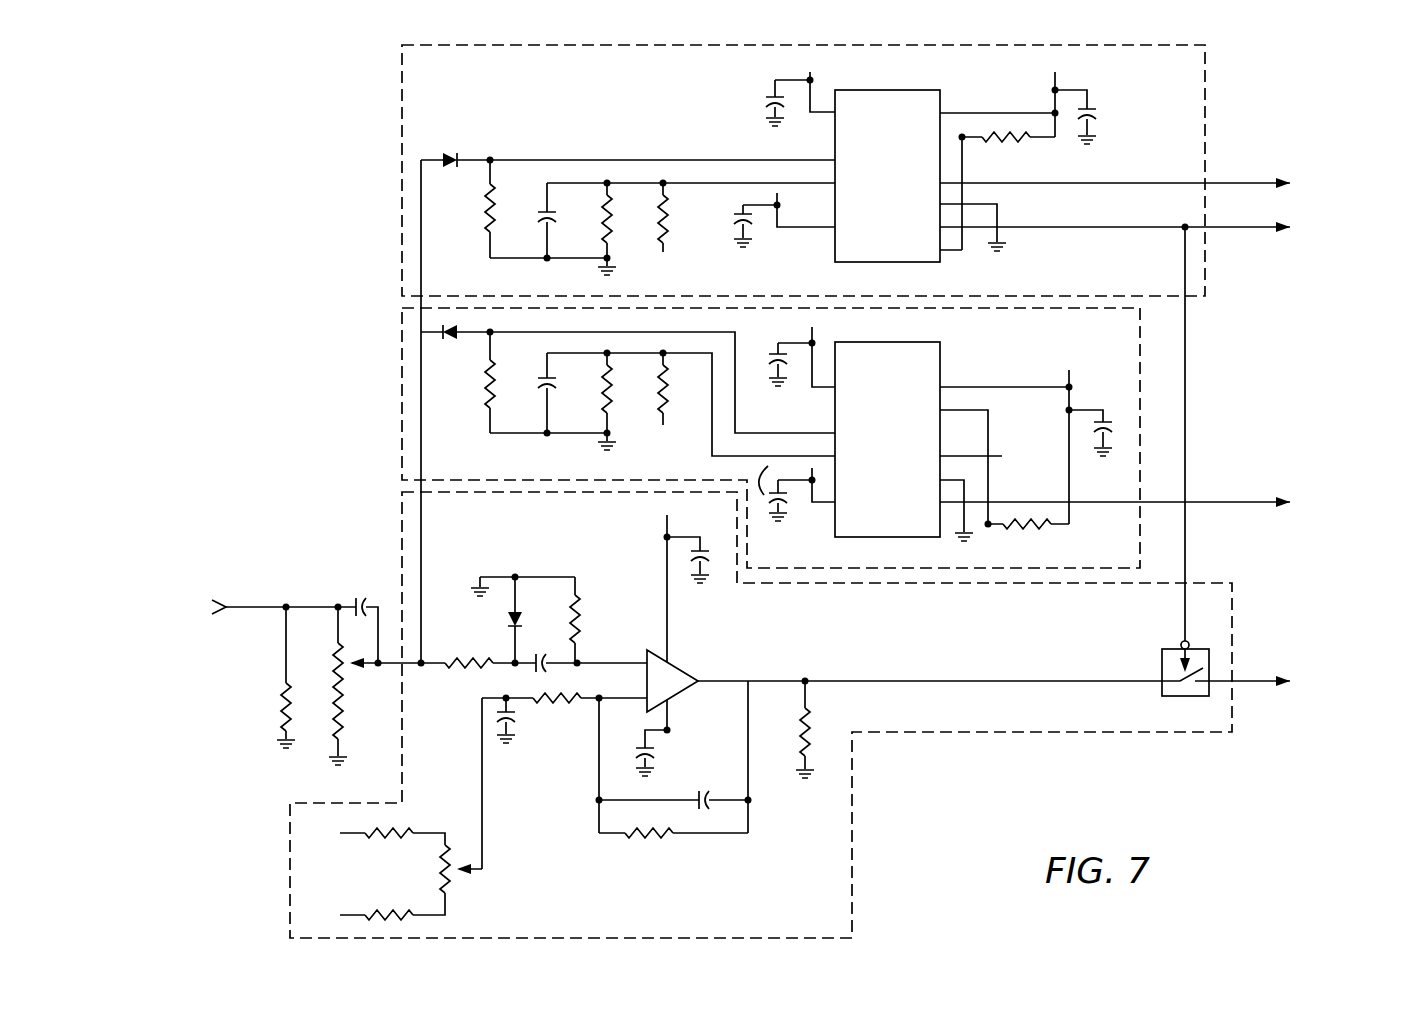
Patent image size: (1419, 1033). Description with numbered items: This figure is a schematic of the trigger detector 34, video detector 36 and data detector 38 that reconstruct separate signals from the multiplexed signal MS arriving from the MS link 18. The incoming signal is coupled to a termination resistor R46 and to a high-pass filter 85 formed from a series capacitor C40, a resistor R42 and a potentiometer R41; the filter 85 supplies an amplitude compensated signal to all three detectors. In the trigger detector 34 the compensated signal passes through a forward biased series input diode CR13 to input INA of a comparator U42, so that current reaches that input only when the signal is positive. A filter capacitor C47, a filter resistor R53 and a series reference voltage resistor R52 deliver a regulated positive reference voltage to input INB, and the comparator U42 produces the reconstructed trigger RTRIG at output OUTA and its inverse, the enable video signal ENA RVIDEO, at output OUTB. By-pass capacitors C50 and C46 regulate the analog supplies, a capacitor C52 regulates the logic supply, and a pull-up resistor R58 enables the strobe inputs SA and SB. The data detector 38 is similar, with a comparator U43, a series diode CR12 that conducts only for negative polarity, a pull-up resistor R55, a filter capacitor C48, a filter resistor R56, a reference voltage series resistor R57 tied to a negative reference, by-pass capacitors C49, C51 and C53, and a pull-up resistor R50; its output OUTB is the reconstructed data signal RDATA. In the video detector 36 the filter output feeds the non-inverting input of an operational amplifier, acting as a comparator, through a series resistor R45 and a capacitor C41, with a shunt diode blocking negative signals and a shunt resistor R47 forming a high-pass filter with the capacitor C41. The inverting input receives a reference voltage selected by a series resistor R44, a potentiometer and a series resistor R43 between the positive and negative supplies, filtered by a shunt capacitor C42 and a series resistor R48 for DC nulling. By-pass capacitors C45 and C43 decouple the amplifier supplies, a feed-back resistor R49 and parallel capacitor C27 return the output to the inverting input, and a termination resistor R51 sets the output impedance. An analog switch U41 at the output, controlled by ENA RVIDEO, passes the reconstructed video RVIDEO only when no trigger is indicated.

The high-pass filter 85 is at (360, 508).
The trigger detector 34 is at (1205, 92).
The data detector 38 is at (1140, 362).
The video detector 36 is at (1046, 732).
The MS link 18 is at (190, 605).
The series input diode CR13 is at (446, 154).
The filter capacitor C47 is at (486, 224).
The filter resistor R53 is at (535, 214).
The series reference voltage resistor R52 is at (613, 240).
The voltage supply by-pass capacitor C46 is at (738, 226).
The voltage supply by-pass capacitor C50 is at (767, 104).
The comparator U42 is at (887, 176).
The pull-up resistor R58 is at (995, 140).
The by-pass capacitor C52 is at (1106, 116).
The series input diode CR12 is at (453, 340).
The pull-up resistor R55 is at (484, 402).
The filter capacitor C48 is at (536, 386).
The filter resistor R56 is at (600, 400).
The reference voltage series resistor R57 is at (658, 400).
The by-pass capacitor C51 is at (768, 358).
The comparator U43 is at (887, 439).
The pull-up resistor R50 is at (1030, 530).
The by-pass capacitor C53 is at (1112, 427).
The by-pass capacitor C49 is at (797, 493).
The series capacitor C40 is at (358, 596).
The termination resistor R46 is at (281, 712).
The potentiometer R41 is at (337, 668).
The resistor R42 is at (347, 728).
The series resistor R45 is at (468, 656).
The series capacitor C41 is at (546, 641).
The shunt resistor R47 is at (585, 622).
The by-pass capacitor C45 is at (714, 553).
The by-pass capacitor C43 is at (632, 753).
The series resistor R48 is at (558, 714).
The shunt capacitor C42 is at (523, 722).
The parallel capacitor C27 is at (706, 790).
The feed-back resistor R49 is at (637, 845).
The termination resistor R51 is at (796, 736).
The series resistor R44 is at (397, 842).
The series resistor R43 is at (387, 905).
The analog switch U41 is at (1185, 679).